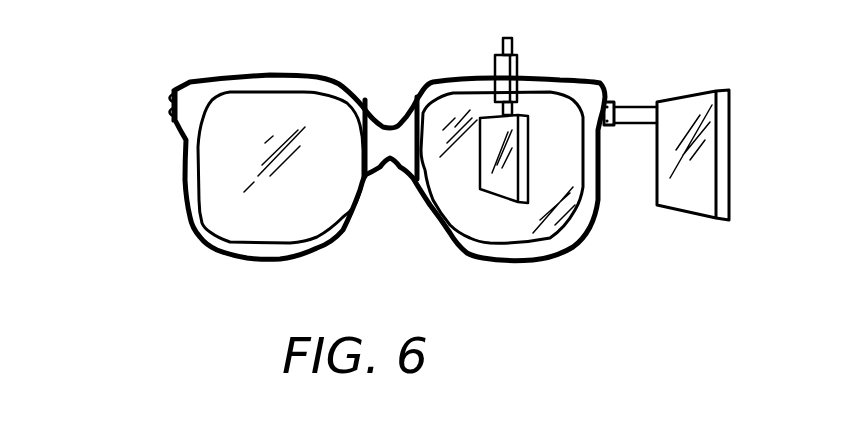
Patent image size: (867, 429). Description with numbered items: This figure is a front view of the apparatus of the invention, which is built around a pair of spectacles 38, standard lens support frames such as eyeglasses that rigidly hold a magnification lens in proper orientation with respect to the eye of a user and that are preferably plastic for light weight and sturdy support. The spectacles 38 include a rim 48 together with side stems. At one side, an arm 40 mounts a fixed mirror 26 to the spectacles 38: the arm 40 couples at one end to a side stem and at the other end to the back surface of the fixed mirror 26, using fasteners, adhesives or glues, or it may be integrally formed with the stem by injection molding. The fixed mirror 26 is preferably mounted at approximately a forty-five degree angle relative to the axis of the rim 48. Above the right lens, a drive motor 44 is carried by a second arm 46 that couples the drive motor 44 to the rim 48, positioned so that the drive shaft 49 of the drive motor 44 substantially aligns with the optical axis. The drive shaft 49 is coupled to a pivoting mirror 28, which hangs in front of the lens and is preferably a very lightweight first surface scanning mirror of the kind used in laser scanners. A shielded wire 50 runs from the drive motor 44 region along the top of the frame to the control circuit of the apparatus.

The fixed mirror 26 is at (673, 208).
The pivoting mirror 28 is at (483, 188).
The spectacles 38 is at (192, 222).
The arm 40 is at (645, 103).
The drive motor 44 is at (500, 73).
The arm 46 is at (509, 38).
The rim 48 is at (205, 93).
The drive shaft 49 is at (503, 108).
The shielded wire 50 is at (520, 78).